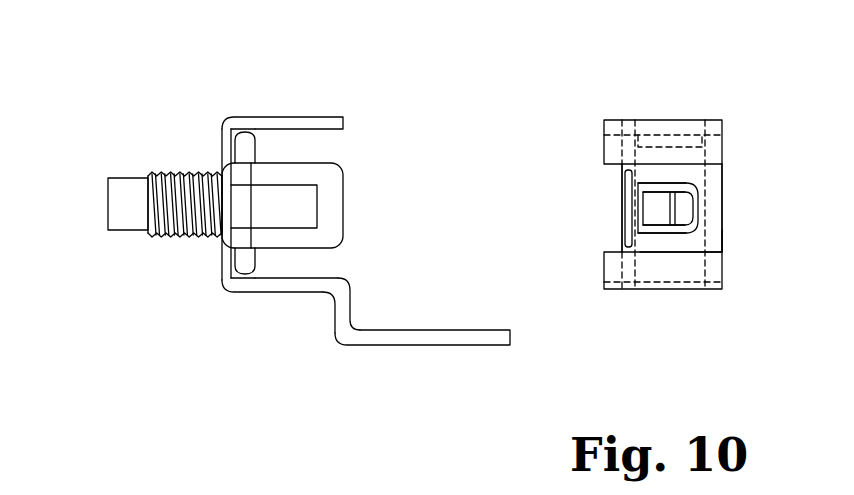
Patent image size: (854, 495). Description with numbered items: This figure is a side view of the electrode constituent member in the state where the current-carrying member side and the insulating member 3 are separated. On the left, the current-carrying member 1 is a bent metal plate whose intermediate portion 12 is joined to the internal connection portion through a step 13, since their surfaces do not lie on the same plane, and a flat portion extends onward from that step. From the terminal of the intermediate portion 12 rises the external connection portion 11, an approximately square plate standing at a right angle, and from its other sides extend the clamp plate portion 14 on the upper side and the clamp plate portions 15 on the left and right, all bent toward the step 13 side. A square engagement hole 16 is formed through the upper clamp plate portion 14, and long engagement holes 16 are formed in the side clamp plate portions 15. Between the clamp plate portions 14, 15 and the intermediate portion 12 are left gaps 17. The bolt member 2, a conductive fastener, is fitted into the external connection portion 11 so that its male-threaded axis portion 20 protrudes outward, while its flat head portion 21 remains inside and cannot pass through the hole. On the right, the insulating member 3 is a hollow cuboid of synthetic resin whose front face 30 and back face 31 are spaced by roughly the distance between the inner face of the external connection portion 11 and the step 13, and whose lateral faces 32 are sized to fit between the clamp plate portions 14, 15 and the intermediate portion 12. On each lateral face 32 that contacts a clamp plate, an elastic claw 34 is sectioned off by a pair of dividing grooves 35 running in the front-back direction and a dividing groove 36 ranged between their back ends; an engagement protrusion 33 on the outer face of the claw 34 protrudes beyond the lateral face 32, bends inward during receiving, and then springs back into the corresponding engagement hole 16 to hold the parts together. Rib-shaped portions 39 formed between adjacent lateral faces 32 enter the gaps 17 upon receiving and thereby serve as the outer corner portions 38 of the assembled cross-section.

The current-carrying member 1 is at (463, 345).
The bolt member 2 is at (125, 182).
The axis portion 20 is at (122, 197).
The insulating member 3 is at (727, 163).
The external connection portion 11 is at (220, 258).
The intermediate portion 12 is at (303, 288).
The step 13 is at (348, 307).
The clamp plate portion 14 is at (315, 117).
The clamp plate portion 15 is at (333, 225).
The engagement hole 16 is at (287, 202).
The gap 17 is at (290, 143).
The head portion 21 is at (245, 138).
The front face 30 is at (622, 200).
The back face 31 is at (723, 228).
The lateral face 32 is at (715, 245).
The engagement protrusion 33 is at (683, 220).
The elastic claw 34 is at (655, 207).
The dividing groove 35 is at (660, 185).
The dividing groove 36 is at (693, 212).
The outer corner portion 38 is at (710, 202).
The rib-shaped portion 39 is at (695, 123).